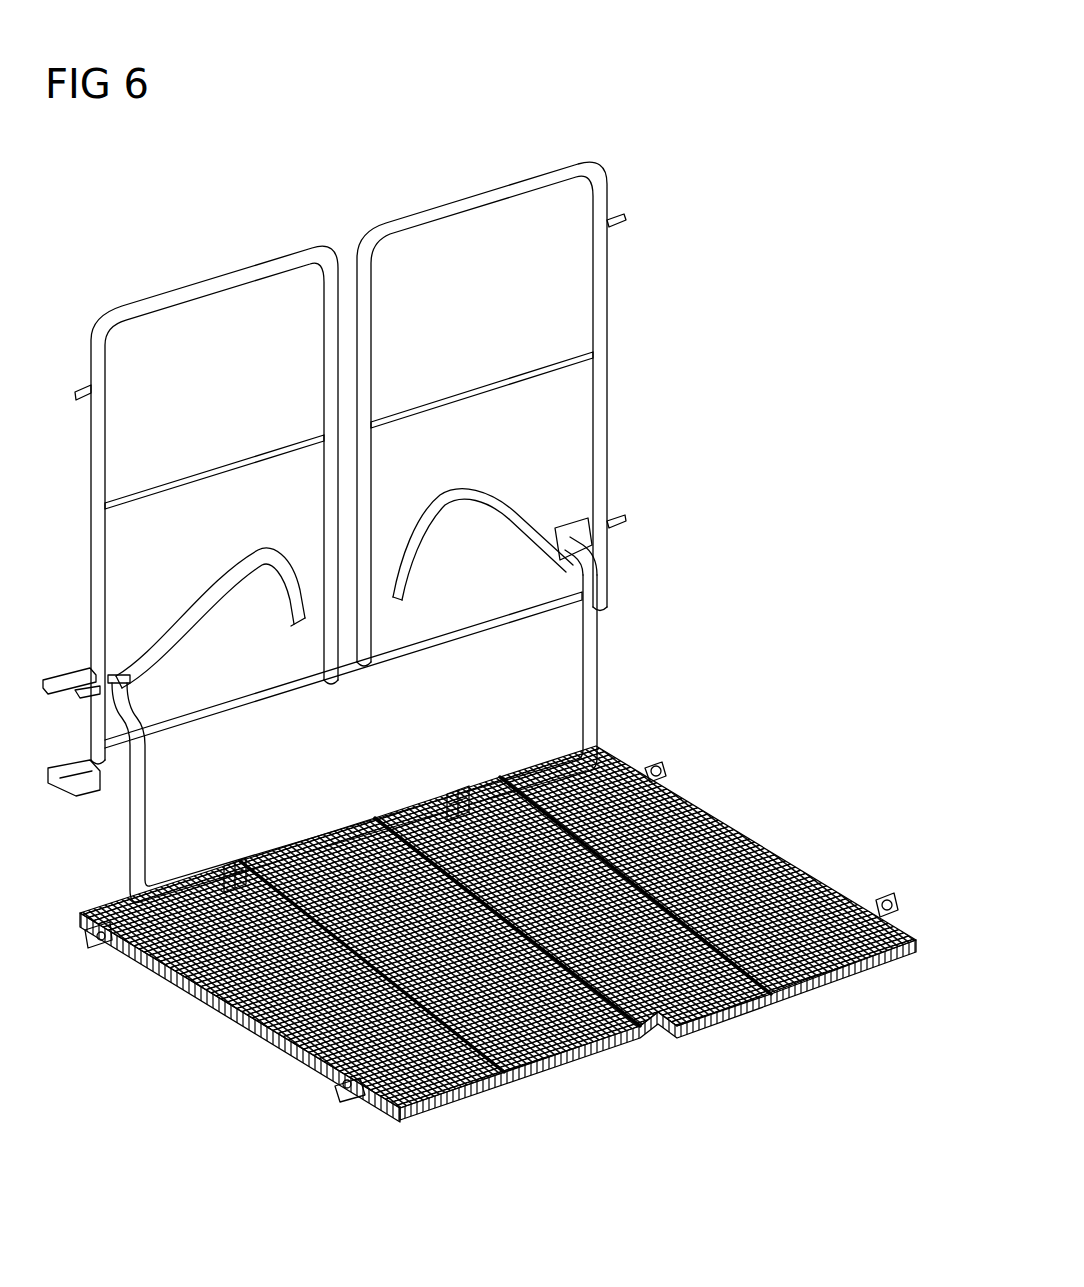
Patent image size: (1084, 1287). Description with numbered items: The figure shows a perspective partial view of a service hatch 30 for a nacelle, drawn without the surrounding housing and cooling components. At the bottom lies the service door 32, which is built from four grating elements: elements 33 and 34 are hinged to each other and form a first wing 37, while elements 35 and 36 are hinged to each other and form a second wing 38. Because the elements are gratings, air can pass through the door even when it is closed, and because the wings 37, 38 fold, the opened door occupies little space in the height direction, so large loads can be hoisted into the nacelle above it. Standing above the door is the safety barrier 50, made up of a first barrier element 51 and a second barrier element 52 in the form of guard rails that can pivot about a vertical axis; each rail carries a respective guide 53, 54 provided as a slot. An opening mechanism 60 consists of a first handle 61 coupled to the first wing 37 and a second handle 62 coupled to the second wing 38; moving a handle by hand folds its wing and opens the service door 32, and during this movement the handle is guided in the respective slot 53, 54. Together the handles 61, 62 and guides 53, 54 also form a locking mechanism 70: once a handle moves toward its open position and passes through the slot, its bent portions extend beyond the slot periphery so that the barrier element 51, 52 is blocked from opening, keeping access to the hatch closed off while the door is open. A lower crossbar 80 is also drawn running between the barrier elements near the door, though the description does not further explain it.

The service hatch 30 is at (714, 147).
The service door 32 is at (732, 1111).
The element 33 is at (860, 985).
The element 34 is at (723, 1025).
The element 35 is at (577, 1063).
The element 36 is at (445, 1110).
The first wing 37 is at (962, 1004).
The second wing 38 is at (721, 1086).
The safety barrier 50 is at (304, 190).
The first barrier element 51 is at (487, 200).
The second barrier element 52 is at (190, 285).
The guide 53 is at (515, 522).
The guide 54 is at (270, 545).
The opening mechanism 60 is at (692, 707).
The first handle 61 is at (600, 672).
The second handle 62 is at (147, 820).
The locking mechanism 70 is at (778, 478).
The lower crossbar 80 is at (352, 676).